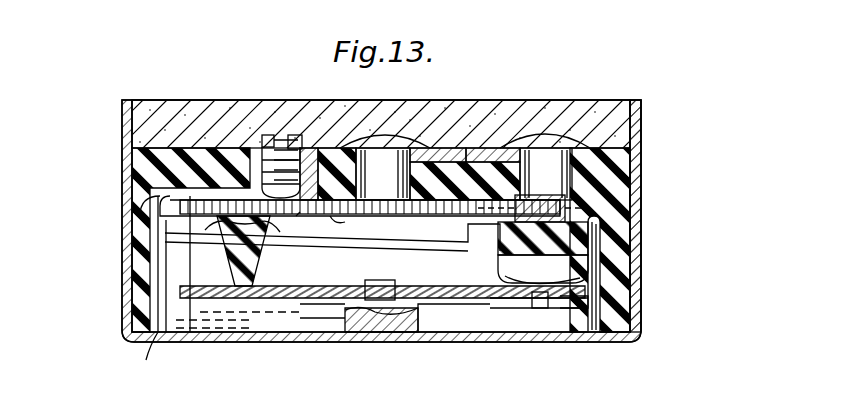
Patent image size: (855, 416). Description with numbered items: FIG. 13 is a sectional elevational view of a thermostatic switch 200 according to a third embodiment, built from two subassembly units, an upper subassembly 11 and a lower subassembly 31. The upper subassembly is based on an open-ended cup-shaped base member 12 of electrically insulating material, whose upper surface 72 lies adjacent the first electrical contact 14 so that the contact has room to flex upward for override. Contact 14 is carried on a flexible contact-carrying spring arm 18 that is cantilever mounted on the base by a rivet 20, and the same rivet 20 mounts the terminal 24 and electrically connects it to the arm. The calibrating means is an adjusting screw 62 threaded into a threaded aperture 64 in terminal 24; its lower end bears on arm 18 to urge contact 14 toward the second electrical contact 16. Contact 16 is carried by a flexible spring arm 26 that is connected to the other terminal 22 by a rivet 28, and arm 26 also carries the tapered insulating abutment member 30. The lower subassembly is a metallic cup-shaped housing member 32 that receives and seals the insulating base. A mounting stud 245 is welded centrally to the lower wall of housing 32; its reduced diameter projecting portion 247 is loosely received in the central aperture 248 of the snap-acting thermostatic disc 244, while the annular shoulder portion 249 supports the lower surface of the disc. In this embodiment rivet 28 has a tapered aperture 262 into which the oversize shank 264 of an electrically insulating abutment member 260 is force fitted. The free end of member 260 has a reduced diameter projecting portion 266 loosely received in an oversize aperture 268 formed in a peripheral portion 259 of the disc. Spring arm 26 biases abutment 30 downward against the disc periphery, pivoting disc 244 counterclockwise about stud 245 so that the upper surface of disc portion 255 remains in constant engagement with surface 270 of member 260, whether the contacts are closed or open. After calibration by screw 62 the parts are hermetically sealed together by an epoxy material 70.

The epoxy material 70 is at (160, 100).
The upper surface of casing 72 is at (218, 220).
The cup-shaped base member 12 is at (620, 188).
The subassembly 11 is at (638, 146).
The terminal 24 is at (322, 150).
The threaded aperture 64 is at (268, 145).
The adjusting screw 62 is at (296, 148).
The rivet 20 is at (385, 150).
The terminal 22 is at (462, 150).
The rivet 28 is at (546, 150).
The electrical contact 16 is at (260, 216).
The electrical contact 14 is at (296, 216).
The contact-carrying spring arm 18 is at (348, 223).
The spring arm 26 is at (412, 250).
The tapered insulating abutment member 30 is at (258, 272).
The portion of disc 255 is at (159, 292).
The aperture 248 is at (368, 286).
The reduced diameter projecting portion 247 is at (386, 290).
The mounting stud 245 is at (410, 332).
The shoulder portion 249 is at (358, 332).
The snap-acting thermostatic disc 244 is at (455, 330).
The tapered aperture 262 is at (500, 256).
The shank 264 is at (518, 214).
The insulating abutment member 260 is at (598, 245).
The portion of disc 259 is at (595, 258).
The surface 270 is at (520, 306).
The oversize aperture 268 is at (528, 300).
The reduced diameter projecting portion 266 is at (546, 300).
The cup-shaped housing member 32 is at (300, 340).
The subassembly 31 is at (244, 346).
The thermostatic switch 200 is at (660, 108).